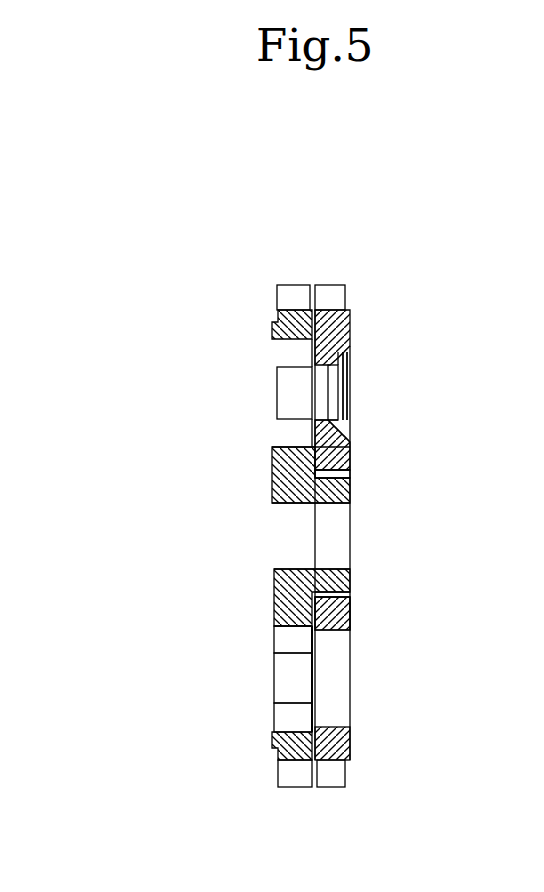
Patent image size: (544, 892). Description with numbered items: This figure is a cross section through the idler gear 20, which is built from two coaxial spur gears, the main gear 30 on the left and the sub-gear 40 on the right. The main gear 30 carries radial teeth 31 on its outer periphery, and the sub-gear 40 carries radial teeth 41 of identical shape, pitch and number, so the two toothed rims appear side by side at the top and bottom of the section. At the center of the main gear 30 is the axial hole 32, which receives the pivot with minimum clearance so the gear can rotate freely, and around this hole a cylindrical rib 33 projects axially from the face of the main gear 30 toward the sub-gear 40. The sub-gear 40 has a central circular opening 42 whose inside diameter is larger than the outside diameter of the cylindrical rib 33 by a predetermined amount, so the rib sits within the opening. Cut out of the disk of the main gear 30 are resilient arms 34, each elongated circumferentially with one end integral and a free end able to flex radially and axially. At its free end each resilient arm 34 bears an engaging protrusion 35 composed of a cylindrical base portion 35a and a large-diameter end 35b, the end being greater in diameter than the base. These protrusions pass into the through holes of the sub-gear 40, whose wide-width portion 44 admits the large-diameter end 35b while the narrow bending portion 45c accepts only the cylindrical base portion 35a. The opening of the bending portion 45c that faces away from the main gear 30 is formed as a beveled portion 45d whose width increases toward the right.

The idler gear 20 is at (249, 281).
The main gear 30 is at (270, 614).
The radial teeth 31 is at (290, 297).
The axial hole 32 is at (332, 569).
The cylindrical rib 33 is at (337, 488).
The resilient arm 34 is at (293, 392).
The engaging protrusion 35 is at (441, 360).
The cylindrical base portion 35a is at (323, 375).
The large-diameter end 35b is at (336, 385).
The sub-gear 40 is at (347, 317).
The radial teeth 41 is at (330, 288).
The circular opening 42 is at (337, 474).
The wide-width portion 44 is at (332, 632).
The bending portion 45c is at (323, 418).
The beveled portion 45d is at (328, 420).